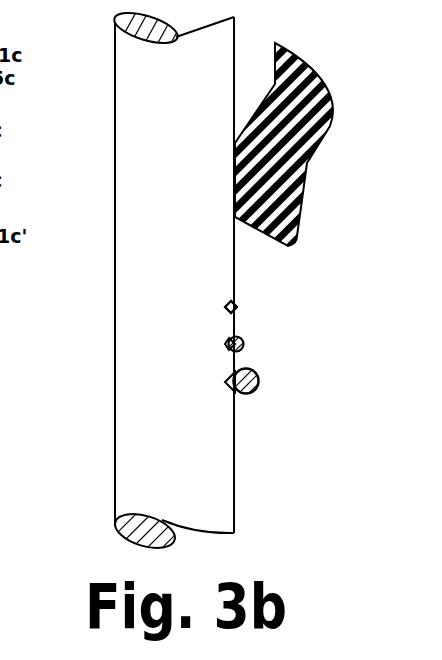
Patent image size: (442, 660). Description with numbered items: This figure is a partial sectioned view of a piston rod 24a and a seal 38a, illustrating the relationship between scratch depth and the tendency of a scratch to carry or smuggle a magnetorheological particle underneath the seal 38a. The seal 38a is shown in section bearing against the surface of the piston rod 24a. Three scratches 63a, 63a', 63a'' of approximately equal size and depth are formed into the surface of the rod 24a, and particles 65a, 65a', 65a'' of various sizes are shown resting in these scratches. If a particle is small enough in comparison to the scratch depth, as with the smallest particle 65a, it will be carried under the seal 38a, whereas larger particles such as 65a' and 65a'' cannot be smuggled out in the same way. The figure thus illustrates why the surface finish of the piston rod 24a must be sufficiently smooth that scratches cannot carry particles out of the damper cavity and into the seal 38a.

The piston rod 24a is at (188, 122).
The seal 38a is at (313, 147).
The scratch 63a is at (137, 313).
The scratch 63a' is at (120, 357).
The scratch 63a'' is at (130, 404).
The particle 65a is at (311, 299).
The particle 65a' is at (310, 348).
The particle 65a'' is at (309, 393).